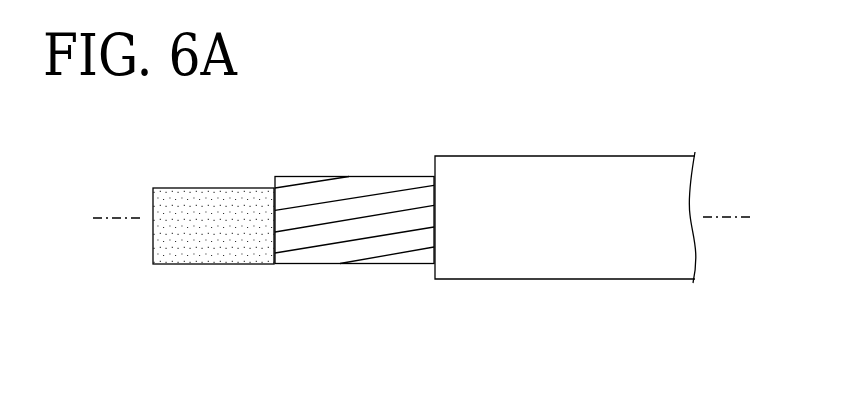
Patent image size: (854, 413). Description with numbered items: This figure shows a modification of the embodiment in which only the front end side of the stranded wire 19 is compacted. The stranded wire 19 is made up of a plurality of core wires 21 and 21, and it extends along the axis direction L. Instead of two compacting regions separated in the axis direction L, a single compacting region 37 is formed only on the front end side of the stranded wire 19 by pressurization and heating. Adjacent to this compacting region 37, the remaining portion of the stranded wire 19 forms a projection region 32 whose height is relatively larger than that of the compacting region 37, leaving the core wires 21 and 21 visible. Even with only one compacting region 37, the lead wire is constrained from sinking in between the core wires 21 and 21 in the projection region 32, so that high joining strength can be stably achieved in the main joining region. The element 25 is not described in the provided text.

The axis direction L is at (112, 217).
The stranded wire 19 is at (424, 185).
The compacting region 37 is at (205, 188).
The projection region 32 is at (330, 177).
The core wires 21 is at (378, 222).
The insulating sheath 25 is at (572, 156).